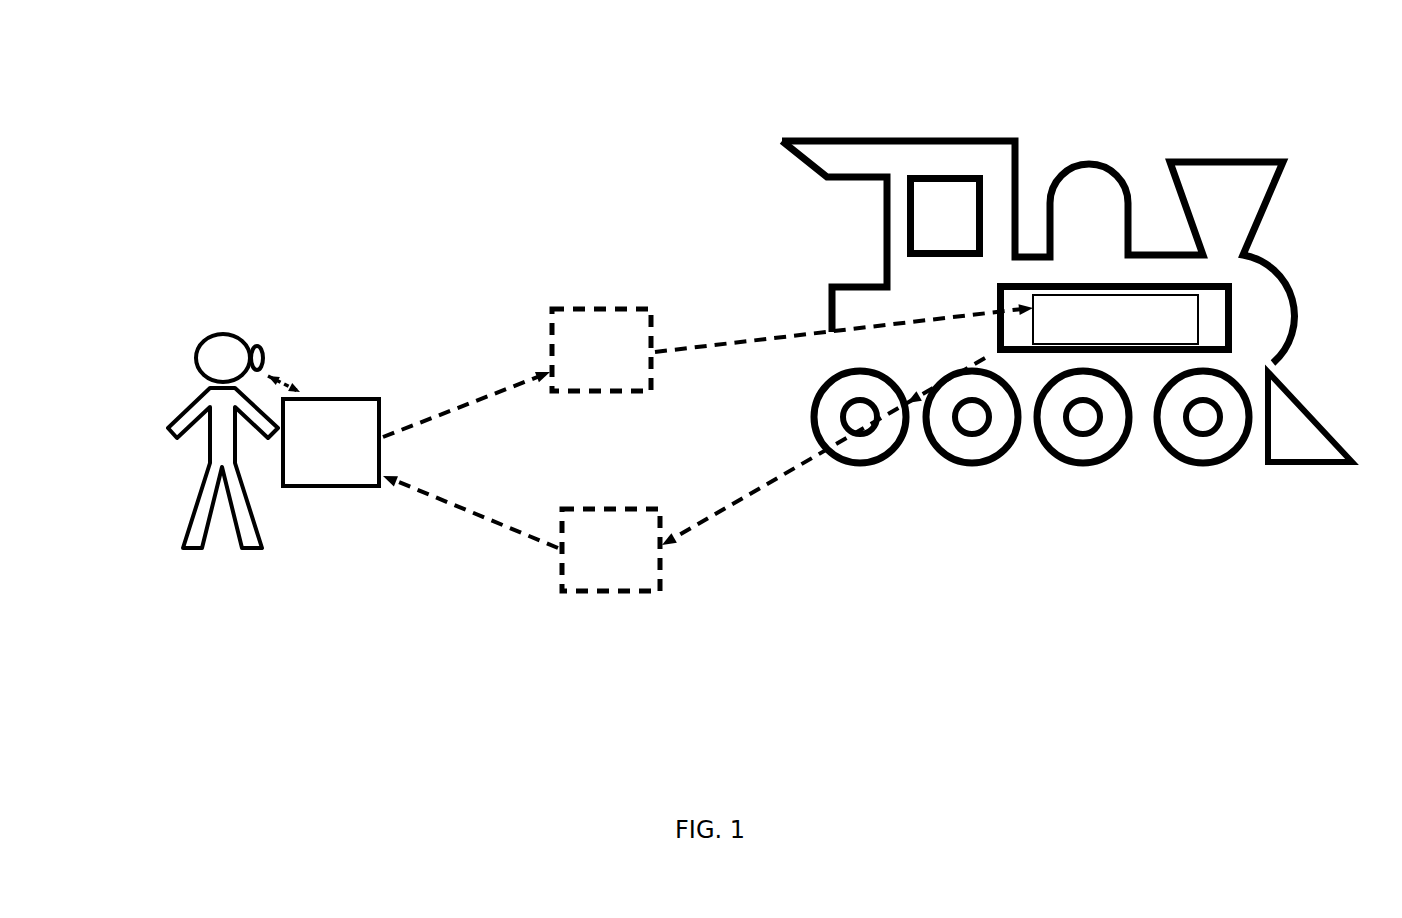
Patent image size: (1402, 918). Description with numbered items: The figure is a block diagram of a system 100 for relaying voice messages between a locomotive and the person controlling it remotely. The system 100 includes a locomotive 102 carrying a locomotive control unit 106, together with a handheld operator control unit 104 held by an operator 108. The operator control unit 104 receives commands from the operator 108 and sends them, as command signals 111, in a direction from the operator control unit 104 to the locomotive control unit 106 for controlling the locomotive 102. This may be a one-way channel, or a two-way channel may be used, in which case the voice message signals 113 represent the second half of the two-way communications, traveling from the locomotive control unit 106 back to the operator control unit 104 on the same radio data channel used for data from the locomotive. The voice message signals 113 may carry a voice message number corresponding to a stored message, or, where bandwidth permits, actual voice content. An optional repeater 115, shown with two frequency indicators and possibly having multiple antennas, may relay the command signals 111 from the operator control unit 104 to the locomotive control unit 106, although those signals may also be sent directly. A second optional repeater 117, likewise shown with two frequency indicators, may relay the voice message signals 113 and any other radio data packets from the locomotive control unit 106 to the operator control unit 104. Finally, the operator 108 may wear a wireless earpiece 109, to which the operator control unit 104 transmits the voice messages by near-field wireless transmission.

The system 100 is at (436, 154).
The locomotive 102 is at (852, 127).
The operator control unit 104 is at (333, 400).
The locomotive control unit 106 is at (1200, 297).
The operator 108 is at (193, 398).
The wireless earpiece 109 is at (268, 352).
The command signals 111 is at (504, 393).
The voice message signals 113 is at (488, 517).
The repeater 115 is at (592, 305).
The repeater 117 is at (662, 582).